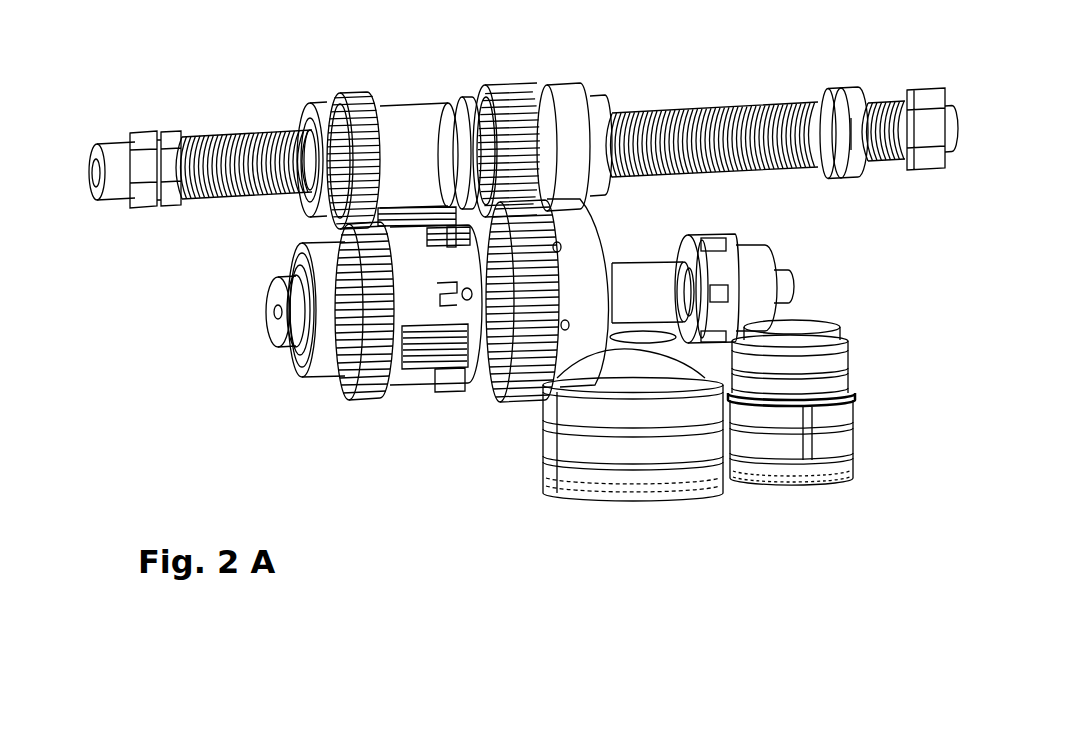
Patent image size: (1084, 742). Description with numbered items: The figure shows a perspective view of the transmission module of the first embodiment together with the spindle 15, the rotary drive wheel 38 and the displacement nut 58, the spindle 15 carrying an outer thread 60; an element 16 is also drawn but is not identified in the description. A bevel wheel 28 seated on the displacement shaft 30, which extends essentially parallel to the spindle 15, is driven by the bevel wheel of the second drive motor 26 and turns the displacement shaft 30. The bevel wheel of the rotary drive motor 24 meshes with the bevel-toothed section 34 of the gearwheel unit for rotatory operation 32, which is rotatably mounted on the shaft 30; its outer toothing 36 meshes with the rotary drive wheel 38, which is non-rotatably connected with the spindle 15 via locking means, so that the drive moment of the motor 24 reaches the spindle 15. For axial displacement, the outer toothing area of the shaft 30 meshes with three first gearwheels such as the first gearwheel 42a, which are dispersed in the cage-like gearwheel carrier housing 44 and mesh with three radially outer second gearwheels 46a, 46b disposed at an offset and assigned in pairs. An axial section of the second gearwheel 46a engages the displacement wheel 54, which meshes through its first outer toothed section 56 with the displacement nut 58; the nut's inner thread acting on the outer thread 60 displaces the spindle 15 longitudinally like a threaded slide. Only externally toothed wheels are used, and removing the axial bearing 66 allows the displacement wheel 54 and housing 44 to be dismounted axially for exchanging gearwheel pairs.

The spindle 15 is at (686, 110).
The spindle end tube 16 is at (91, 178).
The rotary drive motor 24 is at (620, 358).
The second drive motor 26 is at (810, 322).
The bevel wheel 28 is at (753, 268).
The displacement shaft 30 is at (630, 282).
The gearwheel unit for rotatory operation 32 is at (558, 357).
The bevel-toothed section 34 is at (665, 345).
The outer toothing 36 is at (476, 398).
The rotary drive wheel 38 is at (543, 87).
The first gearwheel 42a is at (462, 216).
The gearwheel carrier housing 44 is at (413, 387).
The second gearwheel 46a is at (413, 212).
The second gearwheel 46b is at (400, 376).
The displacement wheel 54 is at (324, 385).
The first outer toothed section 56 is at (337, 393).
The displacement nut 58 is at (343, 91).
The outer thread 60 is at (293, 132).
The axial bearing 66 is at (280, 333).